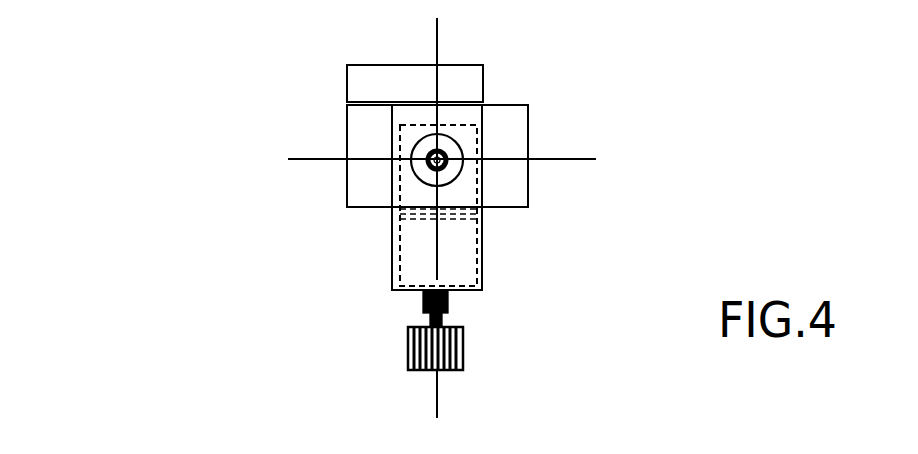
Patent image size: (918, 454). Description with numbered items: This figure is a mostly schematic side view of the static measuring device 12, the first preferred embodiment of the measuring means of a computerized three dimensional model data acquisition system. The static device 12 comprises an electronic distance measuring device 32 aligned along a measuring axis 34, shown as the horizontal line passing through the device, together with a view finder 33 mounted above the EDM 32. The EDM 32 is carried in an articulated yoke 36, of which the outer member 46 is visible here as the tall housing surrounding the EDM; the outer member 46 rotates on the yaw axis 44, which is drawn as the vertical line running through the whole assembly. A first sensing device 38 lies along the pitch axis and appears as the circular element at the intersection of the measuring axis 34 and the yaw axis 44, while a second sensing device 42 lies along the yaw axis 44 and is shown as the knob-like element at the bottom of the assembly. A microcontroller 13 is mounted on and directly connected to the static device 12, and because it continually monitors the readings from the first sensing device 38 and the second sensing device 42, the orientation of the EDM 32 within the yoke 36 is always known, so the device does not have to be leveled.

The measuring means 12 is at (145, 228).
The microcontroller 13 is at (473, 268).
The electronic distance measuring device 32 is at (365, 138).
The view finder 33 is at (358, 82).
The measuring axis 34 is at (288, 159).
The articulated yoke 36 is at (337, 285).
The first sensing device 38 is at (458, 146).
The second sensing device 42 is at (463, 350).
The second orthogonal axis 44 is at (437, 408).
The outer member 46 is at (392, 238).